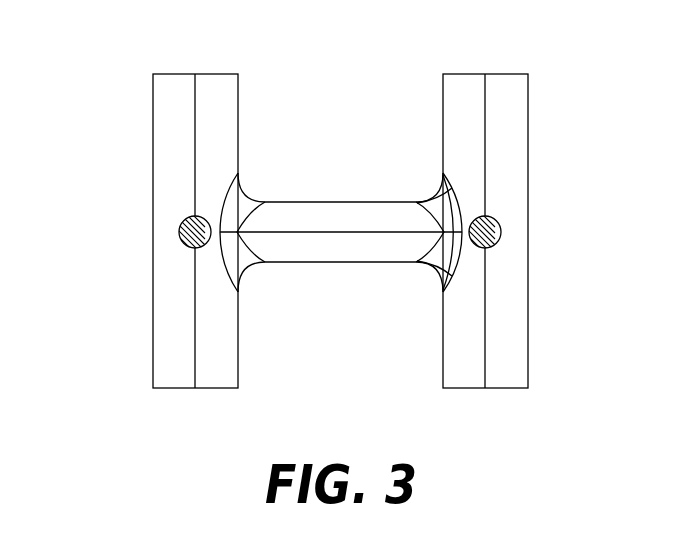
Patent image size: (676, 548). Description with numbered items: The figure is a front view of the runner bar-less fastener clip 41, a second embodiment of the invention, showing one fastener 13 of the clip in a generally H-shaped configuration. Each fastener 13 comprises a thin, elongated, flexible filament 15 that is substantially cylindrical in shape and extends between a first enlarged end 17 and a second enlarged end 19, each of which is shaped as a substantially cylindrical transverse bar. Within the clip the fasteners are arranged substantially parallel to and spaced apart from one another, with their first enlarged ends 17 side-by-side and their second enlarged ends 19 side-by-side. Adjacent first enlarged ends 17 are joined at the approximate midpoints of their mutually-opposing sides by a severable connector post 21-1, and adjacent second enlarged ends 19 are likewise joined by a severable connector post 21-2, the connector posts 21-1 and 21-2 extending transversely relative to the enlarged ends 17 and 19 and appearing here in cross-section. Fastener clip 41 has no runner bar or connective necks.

The fastener 13 is at (397, 373).
The filament 15 is at (310, 255).
The first enlarged end 17 is at (212, 74).
The second enlarged end 19 is at (473, 74).
The severable connector post 21-1 is at (179, 234).
The severable connector post 21-2 is at (501, 230).
The fastener clip 41 is at (118, 385).